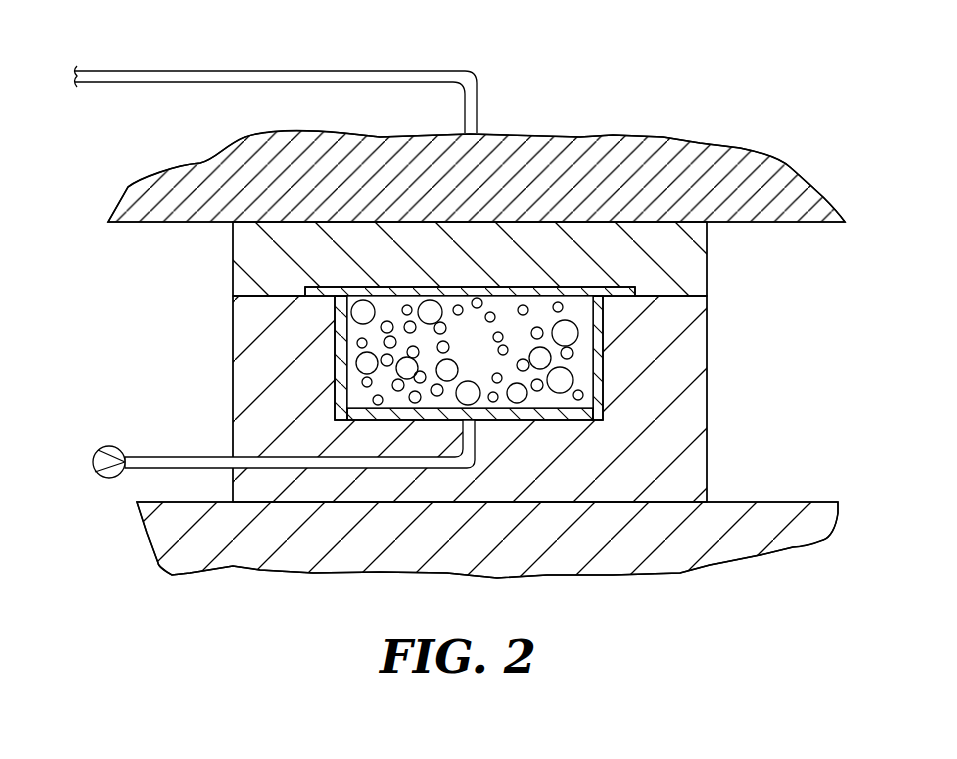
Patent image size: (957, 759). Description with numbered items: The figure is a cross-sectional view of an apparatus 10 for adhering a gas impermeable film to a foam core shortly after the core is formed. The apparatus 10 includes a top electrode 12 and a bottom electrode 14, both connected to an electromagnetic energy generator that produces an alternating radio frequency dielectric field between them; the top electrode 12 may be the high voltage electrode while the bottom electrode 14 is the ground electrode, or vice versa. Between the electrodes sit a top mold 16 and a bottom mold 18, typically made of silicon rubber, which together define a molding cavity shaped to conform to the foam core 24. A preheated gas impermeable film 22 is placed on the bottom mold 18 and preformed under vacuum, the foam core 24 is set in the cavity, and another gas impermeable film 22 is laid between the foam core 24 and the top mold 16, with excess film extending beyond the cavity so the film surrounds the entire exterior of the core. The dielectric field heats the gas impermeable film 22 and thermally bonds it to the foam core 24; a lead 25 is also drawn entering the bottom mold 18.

The apparatus 10 is at (697, 68).
The top electrode 12 is at (783, 175).
The bottom electrode 14 is at (808, 527).
The top mold 16 is at (693, 268).
The bottom mold 18 is at (683, 402).
The gas impermeable film 22 is at (513, 293).
The foam core 24 is at (483, 363).
The sensor lead 25 is at (112, 452).